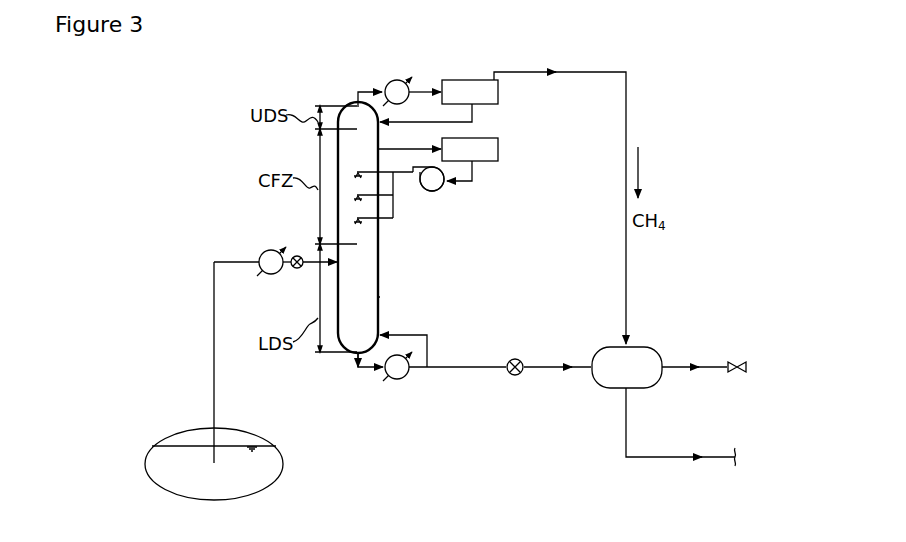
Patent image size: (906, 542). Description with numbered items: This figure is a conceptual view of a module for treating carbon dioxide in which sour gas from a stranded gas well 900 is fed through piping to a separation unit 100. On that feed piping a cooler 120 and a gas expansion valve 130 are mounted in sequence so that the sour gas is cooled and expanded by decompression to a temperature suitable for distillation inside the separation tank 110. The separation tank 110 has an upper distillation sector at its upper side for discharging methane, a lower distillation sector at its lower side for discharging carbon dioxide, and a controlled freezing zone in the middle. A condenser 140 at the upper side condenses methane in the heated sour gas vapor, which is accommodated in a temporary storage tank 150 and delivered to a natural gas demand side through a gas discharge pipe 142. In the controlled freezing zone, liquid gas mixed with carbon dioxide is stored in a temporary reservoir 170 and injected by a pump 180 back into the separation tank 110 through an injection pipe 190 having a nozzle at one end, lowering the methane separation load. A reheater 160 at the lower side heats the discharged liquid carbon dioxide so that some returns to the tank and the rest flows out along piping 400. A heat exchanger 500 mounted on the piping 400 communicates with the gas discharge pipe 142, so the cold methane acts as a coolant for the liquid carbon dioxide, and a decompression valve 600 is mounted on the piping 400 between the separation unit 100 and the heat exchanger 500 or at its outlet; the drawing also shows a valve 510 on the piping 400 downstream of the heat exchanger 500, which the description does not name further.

The separation unit 100 is at (386, 243).
The separation tank 110 is at (380, 297).
The cooler 120 is at (268, 258).
The gas expansion valve 130 is at (297, 269).
The condenser 140 is at (390, 83).
The gas discharge pipe 142 is at (496, 72).
The temporary storage tank 150 is at (498, 86).
The reheater 160 is at (383, 379).
The temporary reservoir 170 is at (498, 143).
The pump 180 is at (440, 190).
The injection pipe 190 is at (370, 172).
The piping 400 is at (455, 368).
The heat exchanger 500 is at (592, 383).
The discharge valve 510 is at (737, 360).
The decompression valve 600 is at (514, 358).
The stranded gas well 900 is at (276, 480).